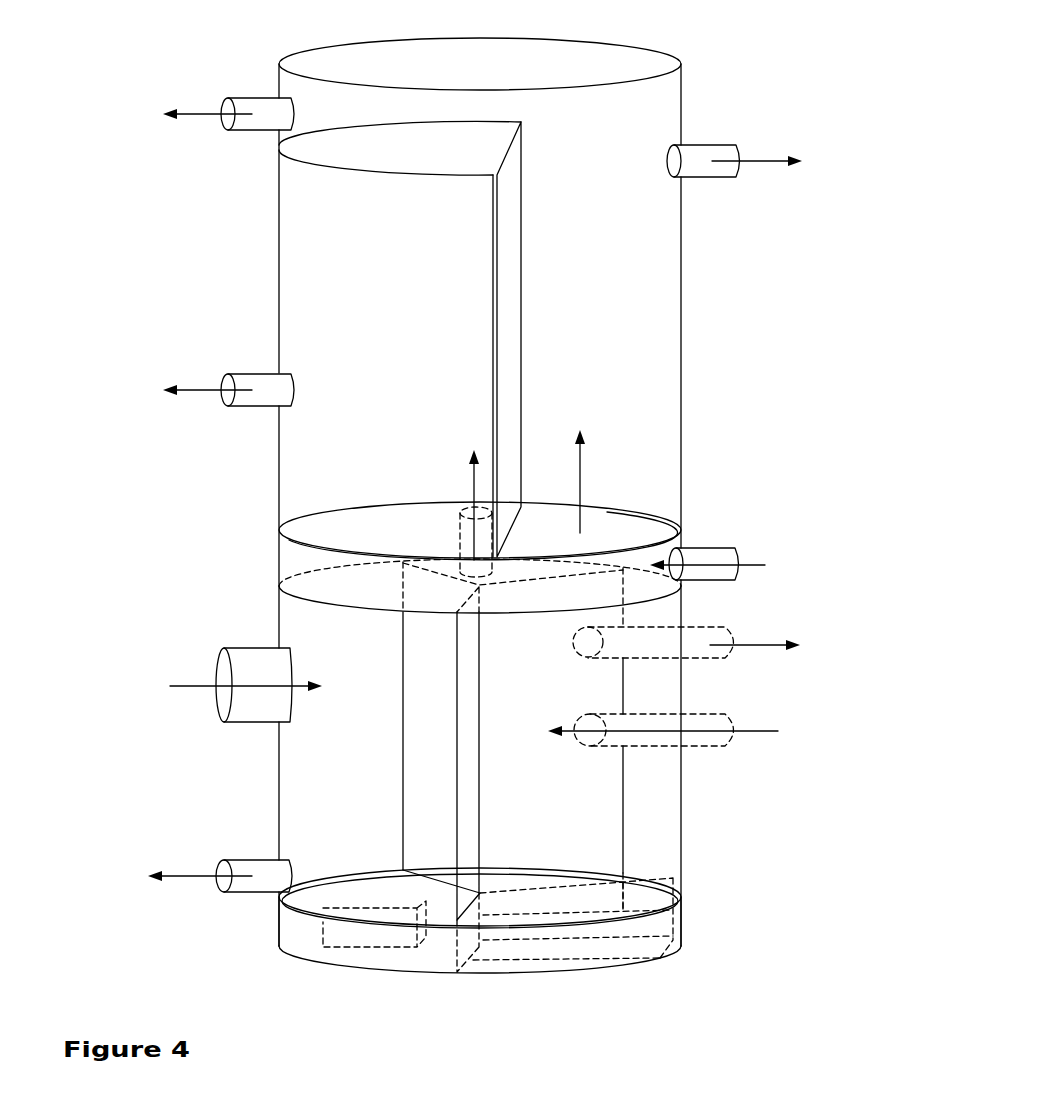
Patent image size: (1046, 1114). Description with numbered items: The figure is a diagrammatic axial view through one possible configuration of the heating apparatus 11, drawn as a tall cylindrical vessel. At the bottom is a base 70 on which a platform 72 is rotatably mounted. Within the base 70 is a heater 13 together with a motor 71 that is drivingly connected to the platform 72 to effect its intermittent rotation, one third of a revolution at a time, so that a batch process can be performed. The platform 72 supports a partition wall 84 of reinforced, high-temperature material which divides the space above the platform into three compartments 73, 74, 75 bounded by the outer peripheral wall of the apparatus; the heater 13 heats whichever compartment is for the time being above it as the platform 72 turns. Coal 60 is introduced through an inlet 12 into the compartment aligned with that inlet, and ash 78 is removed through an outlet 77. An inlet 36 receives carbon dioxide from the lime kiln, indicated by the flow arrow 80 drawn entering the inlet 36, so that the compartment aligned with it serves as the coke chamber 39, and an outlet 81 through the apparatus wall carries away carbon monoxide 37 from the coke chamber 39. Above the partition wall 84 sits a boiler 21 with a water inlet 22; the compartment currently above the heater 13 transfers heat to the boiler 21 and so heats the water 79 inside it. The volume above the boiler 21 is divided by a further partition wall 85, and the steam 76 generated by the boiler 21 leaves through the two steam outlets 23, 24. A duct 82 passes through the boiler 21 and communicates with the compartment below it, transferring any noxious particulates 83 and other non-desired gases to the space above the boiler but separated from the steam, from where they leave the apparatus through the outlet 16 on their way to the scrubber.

The heating apparatus 11 is at (782, 312).
The inlet 12 is at (255, 665).
The heater 13 is at (653, 920).
The outlet 16 is at (263, 380).
The boiler 21 is at (269, 556).
The water inlet 22 is at (710, 555).
The steam outlet 23 is at (258, 103).
The steam outlet 24 is at (702, 150).
The inlet 36 is at (718, 723).
The carbon monoxide 37 is at (766, 643).
The coke chamber 39 is at (537, 568).
The coal 60 is at (175, 690).
The base 70 is at (287, 937).
The motor 71 is at (373, 930).
The platform 72 is at (678, 897).
The compartment 73 is at (335, 770).
The compartment 74 is at (665, 793).
The compartment 75 is at (450, 568).
The steam 76 is at (196, 115).
The outlet 77 is at (265, 868).
The ash 78 is at (177, 877).
The water 79 is at (752, 566).
The inflow 80 is at (760, 734).
The outlet 81 is at (697, 652).
The duct 82 is at (463, 527).
The noxious particulates 83 is at (185, 388).
The partition wall 84 is at (463, 775).
The further partition wall 85 is at (510, 255).